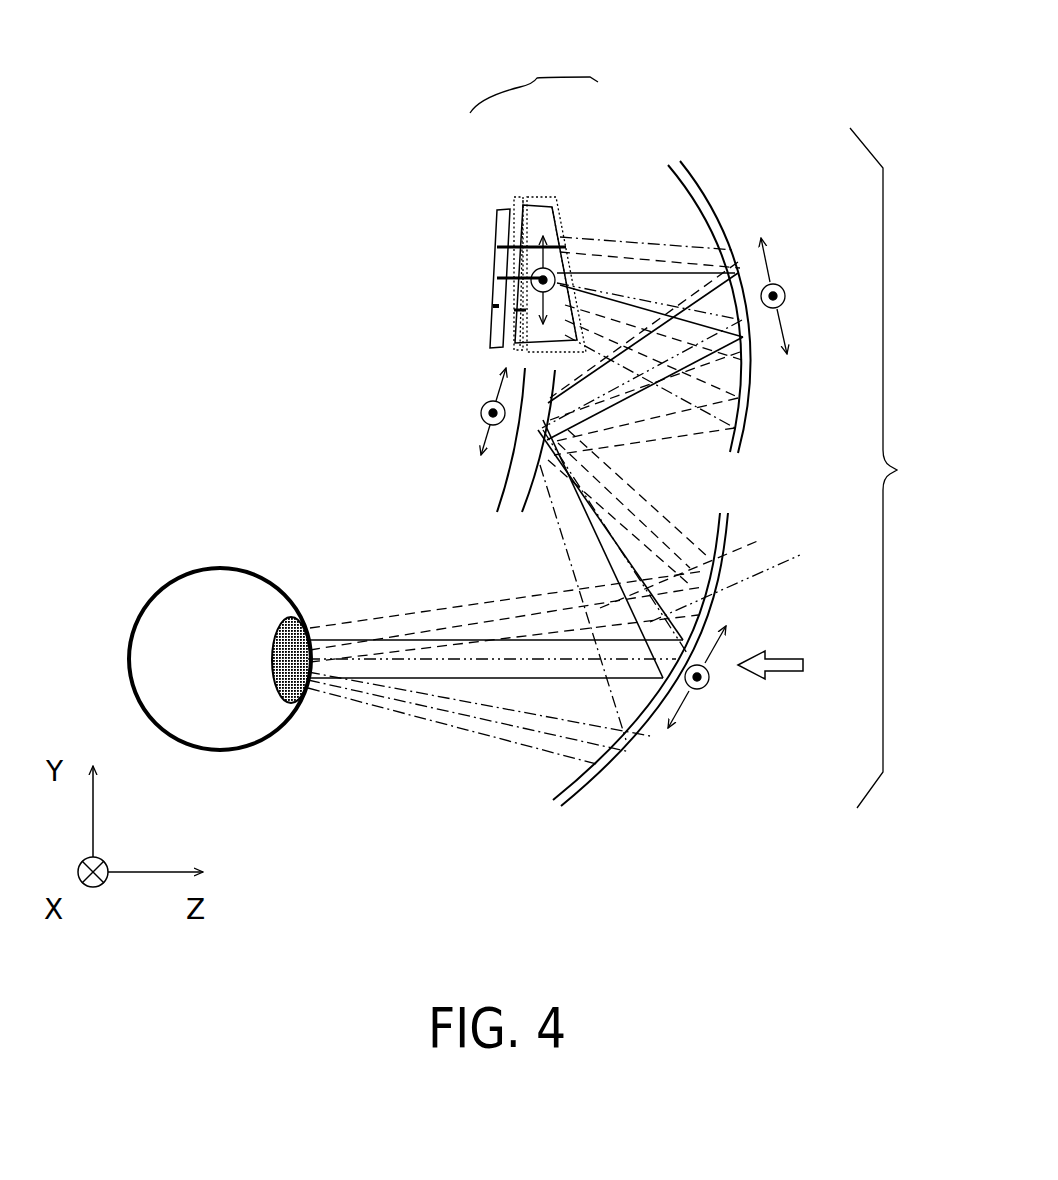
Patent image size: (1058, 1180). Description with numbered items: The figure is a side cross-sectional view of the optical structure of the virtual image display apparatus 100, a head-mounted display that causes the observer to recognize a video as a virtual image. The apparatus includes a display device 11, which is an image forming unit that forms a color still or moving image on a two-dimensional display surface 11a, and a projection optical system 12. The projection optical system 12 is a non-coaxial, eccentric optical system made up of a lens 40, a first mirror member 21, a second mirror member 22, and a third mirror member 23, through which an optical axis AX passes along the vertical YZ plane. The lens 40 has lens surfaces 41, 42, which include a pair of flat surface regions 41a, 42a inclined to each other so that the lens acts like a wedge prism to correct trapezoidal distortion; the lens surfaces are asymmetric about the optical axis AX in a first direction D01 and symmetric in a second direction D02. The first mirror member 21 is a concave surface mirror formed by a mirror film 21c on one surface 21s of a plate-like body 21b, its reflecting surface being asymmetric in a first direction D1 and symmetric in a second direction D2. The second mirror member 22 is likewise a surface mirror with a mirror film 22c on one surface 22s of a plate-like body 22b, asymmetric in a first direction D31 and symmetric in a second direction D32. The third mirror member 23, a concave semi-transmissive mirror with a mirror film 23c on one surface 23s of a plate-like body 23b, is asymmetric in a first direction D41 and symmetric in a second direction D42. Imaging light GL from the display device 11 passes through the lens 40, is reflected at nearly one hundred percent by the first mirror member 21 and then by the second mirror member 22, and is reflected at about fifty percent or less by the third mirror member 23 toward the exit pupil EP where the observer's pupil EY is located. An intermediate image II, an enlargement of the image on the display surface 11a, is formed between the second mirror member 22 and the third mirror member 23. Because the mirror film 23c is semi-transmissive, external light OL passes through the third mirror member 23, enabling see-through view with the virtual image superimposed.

The virtual image display apparatus 100 is at (356, 150).
The display device 11 is at (497, 222).
The display surface 11a is at (510, 240).
The projection optical system 12 is at (900, 468).
The lens 40 is at (534, 79).
The lens surface 41 is at (515, 197).
The flat surface region 41a is at (505, 215).
The lens surface 42 is at (572, 205).
The flat surface region 42a is at (585, 205).
The first mirror member 21 is at (688, 183).
The plate-like body 21b is at (722, 232).
The mirror film 21c is at (712, 230).
The surface 21s is at (738, 380).
The second mirror member 22 is at (340, 400).
The plate-like body 22b is at (513, 487).
The mirror film 22c is at (527, 477).
The surface 22s is at (520, 488).
The third mirror member 23 is at (558, 803).
The plate-like body 23b is at (616, 750).
The mirror film 23c is at (636, 754).
The surface 23s is at (656, 726).
The first direction D01 is at (522, 261).
The second direction D02 is at (535, 284).
The first direction D1 is at (770, 275).
The second direction D2 is at (785, 312).
The first direction D31 is at (492, 400).
The second direction D32 is at (486, 412).
The first direction D41 is at (707, 655).
The second direction D42 is at (701, 690).
The pupil EY is at (287, 630).
The exit pupil EP is at (307, 695).
The imaging light GL is at (612, 236).
The optical axis AX is at (633, 290).
The external light OL is at (770, 673).
The intermediate image II is at (585, 497).